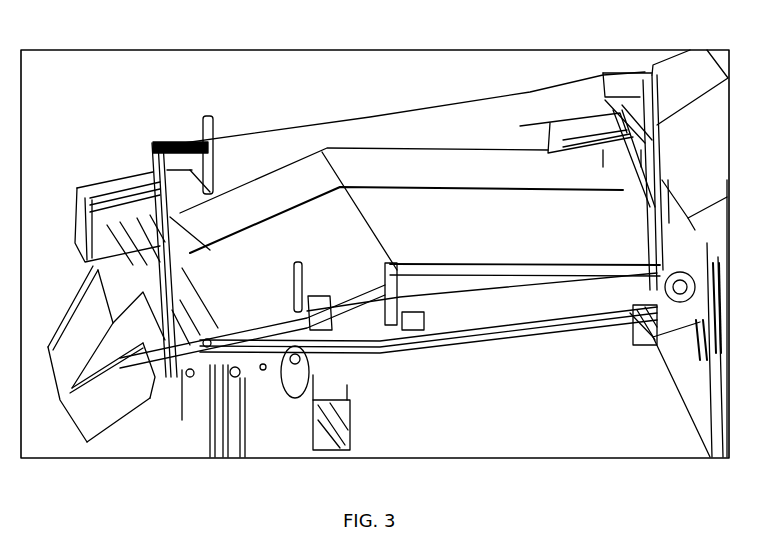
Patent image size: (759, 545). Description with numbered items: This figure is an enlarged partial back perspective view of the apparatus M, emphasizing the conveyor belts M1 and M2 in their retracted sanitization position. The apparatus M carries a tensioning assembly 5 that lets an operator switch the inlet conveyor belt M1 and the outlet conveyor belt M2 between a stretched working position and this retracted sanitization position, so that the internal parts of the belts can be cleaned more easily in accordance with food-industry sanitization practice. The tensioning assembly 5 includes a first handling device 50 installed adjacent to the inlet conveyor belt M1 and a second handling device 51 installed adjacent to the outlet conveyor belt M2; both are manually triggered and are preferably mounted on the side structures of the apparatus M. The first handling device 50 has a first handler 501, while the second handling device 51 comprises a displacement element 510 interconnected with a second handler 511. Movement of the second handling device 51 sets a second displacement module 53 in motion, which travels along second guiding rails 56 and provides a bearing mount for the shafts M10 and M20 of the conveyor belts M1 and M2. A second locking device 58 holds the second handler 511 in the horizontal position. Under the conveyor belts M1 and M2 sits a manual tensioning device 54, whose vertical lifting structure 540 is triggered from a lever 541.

The apparatus M is at (85, 76).
The inlet conveyor belt M1 is at (280, 178).
The outlet conveyor belt M2 is at (333, 218).
The shaft of the inlet conveyor belt M10 is at (263, 370).
The shaft of the outlet conveyor belt M20 is at (235, 377).
The tensioning assembly 5 is at (452, 440).
The first handling device 50 is at (210, 105).
The first handler 501 is at (205, 128).
The second handling device 51 is at (292, 418).
The displacement element 510 is at (298, 385).
The second handler 511 is at (312, 297).
The second displacement module 53 is at (237, 335).
The manual tensioning device 54 is at (432, 330).
The vertical lifting structure 540 is at (390, 282).
The lever 541 is at (412, 320).
The second guiding rails 56 is at (207, 348).
The second locking device 58 is at (296, 284).